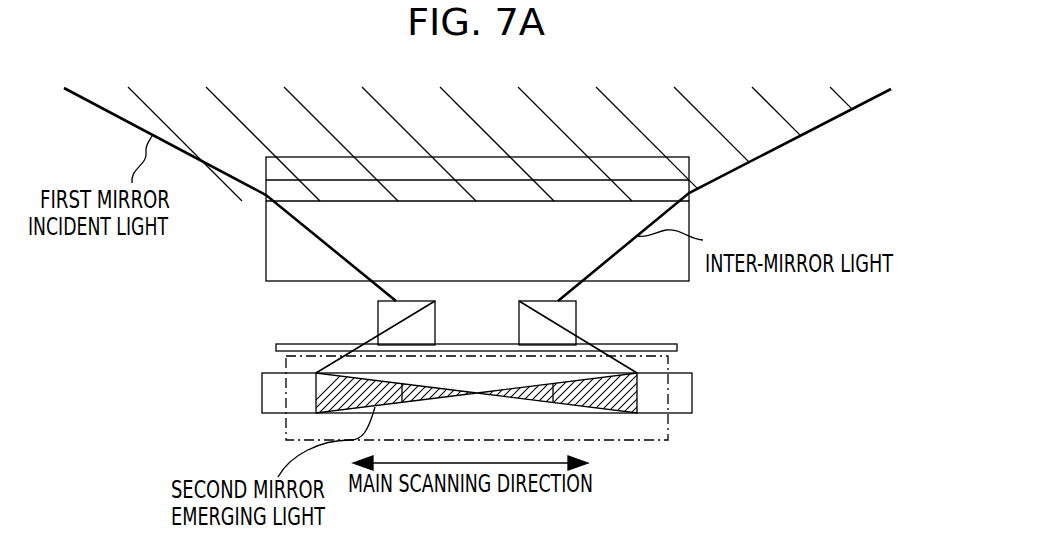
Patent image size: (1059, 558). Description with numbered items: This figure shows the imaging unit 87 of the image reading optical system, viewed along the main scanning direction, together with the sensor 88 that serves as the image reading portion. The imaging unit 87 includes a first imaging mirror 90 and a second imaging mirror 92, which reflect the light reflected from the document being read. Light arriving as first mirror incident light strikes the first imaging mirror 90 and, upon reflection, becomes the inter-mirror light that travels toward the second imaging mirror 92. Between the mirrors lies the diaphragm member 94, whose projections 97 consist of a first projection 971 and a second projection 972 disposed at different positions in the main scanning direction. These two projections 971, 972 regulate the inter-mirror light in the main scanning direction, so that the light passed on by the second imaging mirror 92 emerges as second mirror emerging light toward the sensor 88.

The imaging unit 87 is at (778, 210).
The sensor 88 is at (262, 396).
The first imaging mirror 90 is at (265, 247).
The second imaging mirror 92 is at (650, 442).
The diaphragm member 94 is at (695, 333).
The projections 97 is at (473, 320).
The first projection 971 is at (560, 318).
The second projection 972 is at (397, 322).